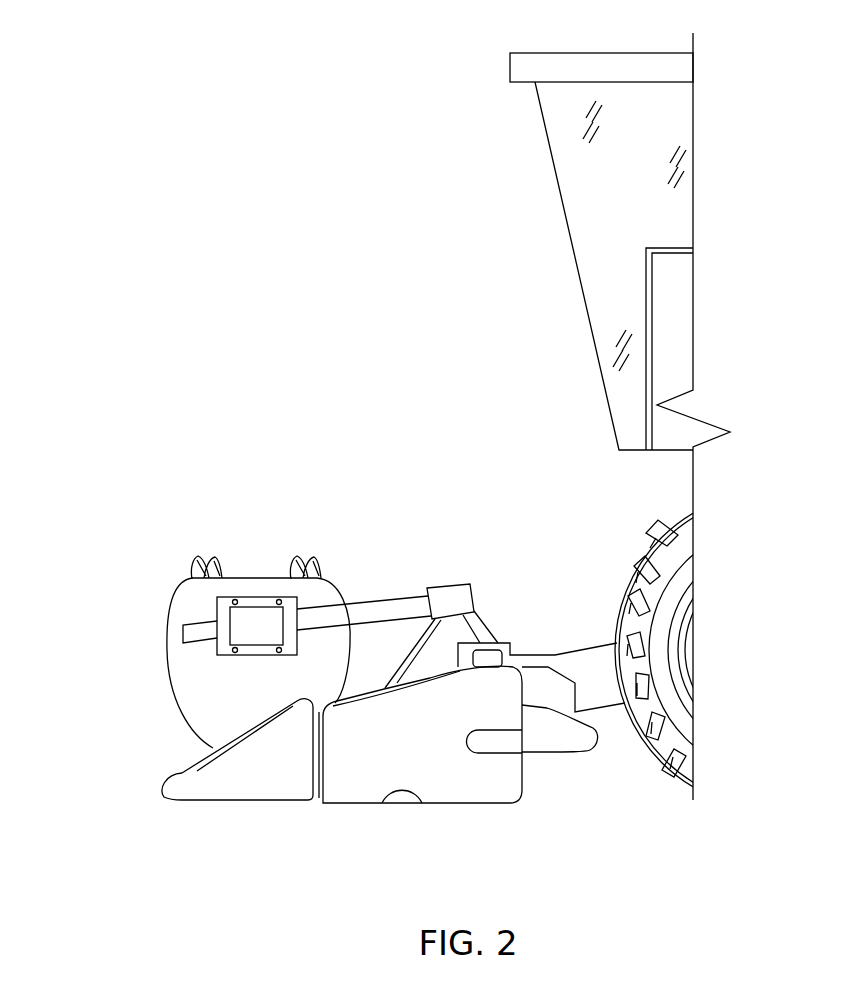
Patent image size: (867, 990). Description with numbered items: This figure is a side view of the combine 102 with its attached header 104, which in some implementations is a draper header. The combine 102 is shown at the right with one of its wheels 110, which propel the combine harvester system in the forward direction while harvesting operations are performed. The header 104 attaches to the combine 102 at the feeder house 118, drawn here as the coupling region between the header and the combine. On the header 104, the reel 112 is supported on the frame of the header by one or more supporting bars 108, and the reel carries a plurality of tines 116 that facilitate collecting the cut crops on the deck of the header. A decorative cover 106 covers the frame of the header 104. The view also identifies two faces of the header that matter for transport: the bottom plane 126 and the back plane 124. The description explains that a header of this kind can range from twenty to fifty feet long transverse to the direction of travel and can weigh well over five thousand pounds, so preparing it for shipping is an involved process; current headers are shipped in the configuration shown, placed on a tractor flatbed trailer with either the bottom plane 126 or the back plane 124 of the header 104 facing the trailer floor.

The combine 102 is at (543, 222).
The header 104 is at (240, 556).
The decorative cover 106 is at (263, 782).
The supporting bars 108 is at (393, 603).
The wheels 110 is at (693, 550).
The reel 112 is at (193, 665).
The tines 116 is at (329, 567).
The feeder house 118 is at (545, 665).
The back plane 124 is at (527, 775).
The bottom plane 126 is at (422, 803).